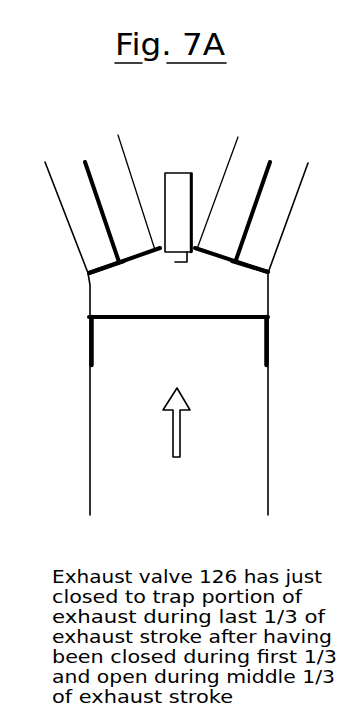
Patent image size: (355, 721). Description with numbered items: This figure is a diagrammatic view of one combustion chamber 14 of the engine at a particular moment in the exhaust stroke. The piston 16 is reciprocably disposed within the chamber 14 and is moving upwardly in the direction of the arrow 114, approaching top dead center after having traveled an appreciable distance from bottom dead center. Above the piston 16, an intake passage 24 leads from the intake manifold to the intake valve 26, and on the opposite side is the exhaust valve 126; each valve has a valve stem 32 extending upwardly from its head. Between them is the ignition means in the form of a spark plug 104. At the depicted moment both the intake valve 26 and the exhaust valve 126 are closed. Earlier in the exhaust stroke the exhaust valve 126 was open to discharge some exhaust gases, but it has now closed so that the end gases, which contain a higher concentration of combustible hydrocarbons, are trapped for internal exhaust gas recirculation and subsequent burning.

The combustion chamber 14 is at (88, 397).
The piston 16 is at (247, 315).
The passage 24 is at (121, 188).
The intake valve 26 is at (101, 261).
The valve stem 32 is at (99, 182).
The spark plug 104 is at (180, 173).
The arrow 114 is at (180, 436).
The exhaust valve 126 is at (254, 258).